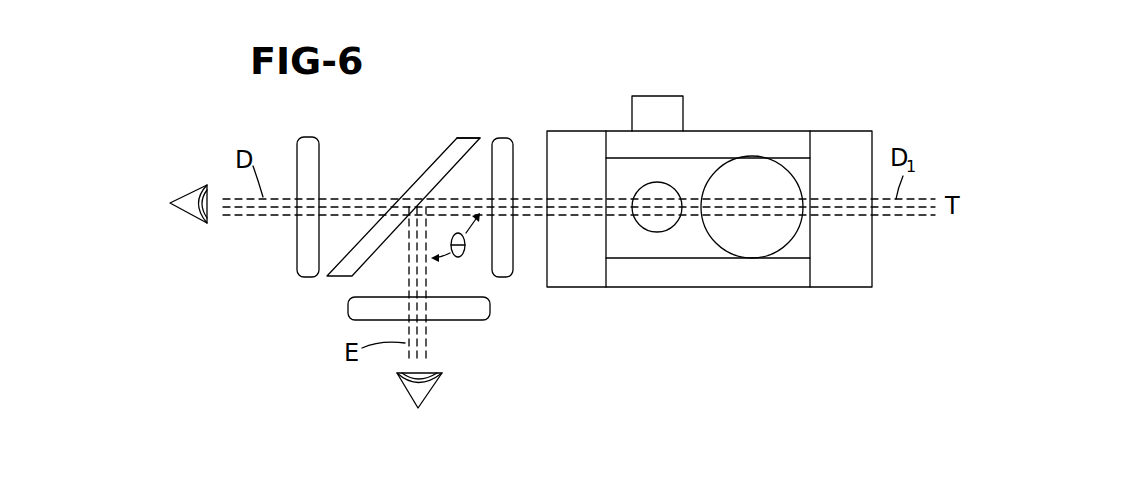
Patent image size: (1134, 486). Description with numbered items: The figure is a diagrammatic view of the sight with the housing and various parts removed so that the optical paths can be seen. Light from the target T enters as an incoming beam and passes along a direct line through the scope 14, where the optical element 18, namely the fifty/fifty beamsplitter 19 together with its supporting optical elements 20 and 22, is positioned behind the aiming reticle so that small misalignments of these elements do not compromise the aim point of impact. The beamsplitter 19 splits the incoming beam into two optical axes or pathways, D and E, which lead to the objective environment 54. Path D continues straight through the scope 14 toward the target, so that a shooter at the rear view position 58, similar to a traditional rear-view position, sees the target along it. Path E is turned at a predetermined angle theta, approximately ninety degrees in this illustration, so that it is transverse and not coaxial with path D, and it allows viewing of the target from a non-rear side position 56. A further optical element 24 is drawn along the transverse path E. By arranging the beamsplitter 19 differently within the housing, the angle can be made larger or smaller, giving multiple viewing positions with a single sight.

The scope 14 is at (745, 131).
The optical element 18 is at (387, 165).
The beamsplitter 19 is at (468, 138).
The supporting optical element 20 is at (508, 138).
The supporting optical element 22 is at (304, 137).
The lens 24 is at (458, 320).
The objective environment 54 is at (316, 294).
The side position 56 is at (417, 433).
The rear view position 58 is at (155, 203).